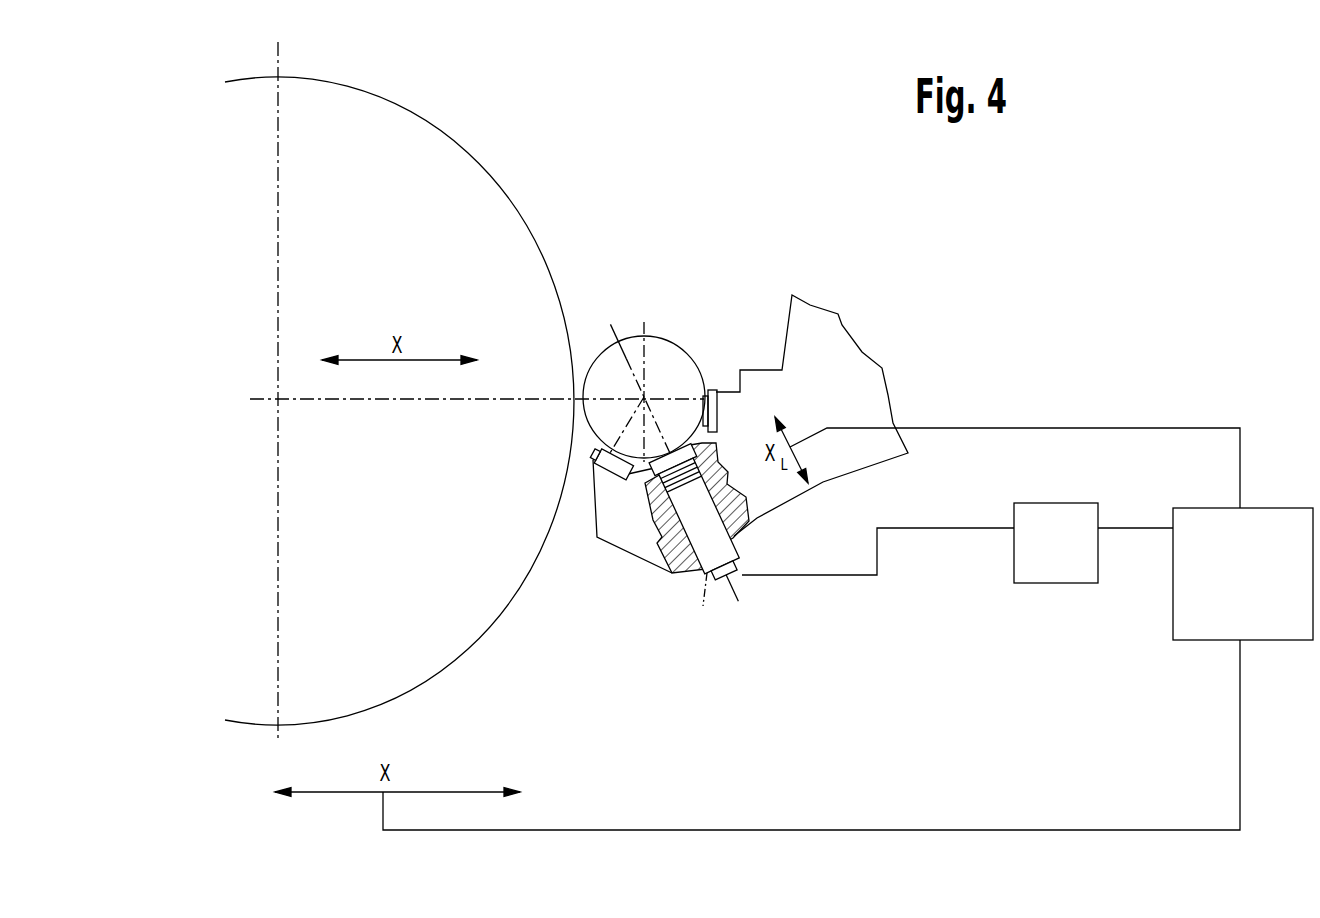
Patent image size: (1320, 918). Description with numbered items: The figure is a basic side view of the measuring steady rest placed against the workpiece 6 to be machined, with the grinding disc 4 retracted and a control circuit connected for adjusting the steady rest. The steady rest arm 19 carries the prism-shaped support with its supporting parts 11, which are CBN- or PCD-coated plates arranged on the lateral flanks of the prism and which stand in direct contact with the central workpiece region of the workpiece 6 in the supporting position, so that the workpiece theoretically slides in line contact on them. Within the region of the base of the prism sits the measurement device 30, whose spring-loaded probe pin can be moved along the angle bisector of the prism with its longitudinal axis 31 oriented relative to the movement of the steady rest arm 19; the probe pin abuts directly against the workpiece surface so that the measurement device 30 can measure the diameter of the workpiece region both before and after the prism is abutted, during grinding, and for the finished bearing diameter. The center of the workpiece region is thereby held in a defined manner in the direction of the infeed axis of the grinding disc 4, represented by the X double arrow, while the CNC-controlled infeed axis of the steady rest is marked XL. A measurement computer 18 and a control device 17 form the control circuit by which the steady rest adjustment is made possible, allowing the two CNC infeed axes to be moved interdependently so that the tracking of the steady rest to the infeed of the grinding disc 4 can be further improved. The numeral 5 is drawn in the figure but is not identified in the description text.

The grinding disc 4 is at (485, 203).
The axis of rotation 5 is at (645, 398).
The workpiece 6 is at (664, 350).
The supporting parts 11 is at (717, 416).
The control device 17 is at (1210, 625).
The measurement computer 18 is at (1026, 560).
The steady rest arm 19 is at (623, 525).
The measurement device 30 is at (742, 553).
The longitudinal axis 31 is at (703, 606).